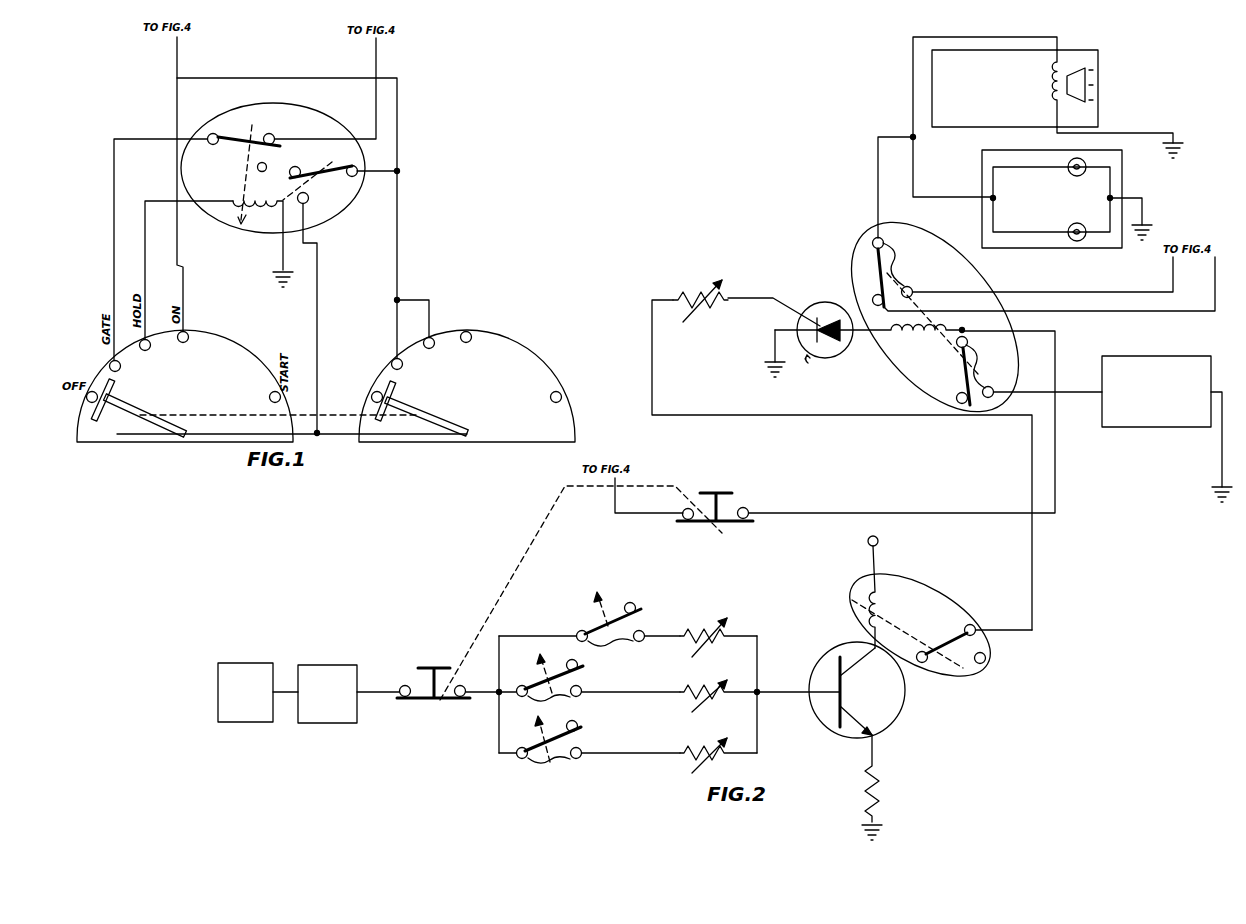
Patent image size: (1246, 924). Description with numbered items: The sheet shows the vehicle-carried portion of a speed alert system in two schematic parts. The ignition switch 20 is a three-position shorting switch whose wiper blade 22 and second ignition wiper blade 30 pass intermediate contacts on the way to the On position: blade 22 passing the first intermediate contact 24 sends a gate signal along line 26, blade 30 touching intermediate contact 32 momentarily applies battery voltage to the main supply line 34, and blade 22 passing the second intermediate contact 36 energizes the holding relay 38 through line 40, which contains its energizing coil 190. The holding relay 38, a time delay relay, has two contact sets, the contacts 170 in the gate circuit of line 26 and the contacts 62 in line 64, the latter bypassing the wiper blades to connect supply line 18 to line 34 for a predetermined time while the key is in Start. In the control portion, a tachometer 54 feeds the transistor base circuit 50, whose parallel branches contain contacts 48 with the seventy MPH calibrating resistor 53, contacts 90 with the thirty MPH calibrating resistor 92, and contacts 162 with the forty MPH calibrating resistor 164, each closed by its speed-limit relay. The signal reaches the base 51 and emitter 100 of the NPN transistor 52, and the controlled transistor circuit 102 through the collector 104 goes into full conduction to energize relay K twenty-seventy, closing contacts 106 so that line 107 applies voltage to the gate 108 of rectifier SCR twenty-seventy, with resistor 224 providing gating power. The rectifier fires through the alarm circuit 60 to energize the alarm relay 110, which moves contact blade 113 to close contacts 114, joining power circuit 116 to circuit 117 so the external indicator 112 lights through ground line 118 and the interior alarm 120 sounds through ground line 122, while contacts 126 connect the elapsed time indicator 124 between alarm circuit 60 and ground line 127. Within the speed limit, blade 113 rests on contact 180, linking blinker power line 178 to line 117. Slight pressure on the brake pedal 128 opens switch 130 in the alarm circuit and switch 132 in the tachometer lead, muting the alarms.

In FIG. 1, the supply line 18 is at (145, 435).
In FIG. 1, the ignition switch 20 is at (218, 399).
In FIG. 1, the wiper blade 22 is at (124, 412).
In FIG. 1, the first intermediate contact 24 is at (109, 364).
In FIG. 1, the line 26 is at (377, 40).
In FIG. 1, the ignition wiper blade 30 is at (405, 410).
In FIG. 1, the intermediate contact 32 is at (403, 364).
In FIG. 1, the main supply line 34 is at (178, 39).
In FIG. 1, the second intermediate contact 36 is at (150, 350).
In FIG. 1, the holding relay 38 is at (211, 180).
In FIG. 1, the line 40 is at (146, 278).
In FIG. 1, the contacts 62 is at (314, 189).
In FIG. 1, the line 64 is at (318, 298).
In FIG. 1, the contacts 170 is at (250, 138).
In FIG. 1, the energizing coil 190 is at (233, 201).
In FIG. 2, the contacts 48 is at (589, 619).
In FIG. 2, the transistor base circuit 50 is at (768, 689).
In FIG. 2, the base 51 is at (836, 695).
In FIG. 2, the NPN transistor 52 is at (831, 735).
In FIG. 2, the seventy MPH calibrating resistor 53 is at (731, 637).
In FIG. 2, the tachometer 54 is at (250, 707).
In FIG. 2, the alarm circuit 60 is at (1027, 337).
In FIG. 2, the contacts 90 is at (589, 681).
In FIG. 2, the thirty MPH calibrating resistor 92 is at (699, 682).
In FIG. 2, the emitter 100 is at (868, 711).
In FIG. 2, the transistor circuit 102 is at (876, 567).
In FIG. 2, the collector 104 is at (868, 677).
In FIG. 2, the contacts 106 is at (964, 631).
In FIG. 2, the line 107 is at (703, 415).
In FIG. 2, the gate 108 is at (804, 323).
In FIG. 2, the alarm relay 110 is at (933, 393).
In FIG. 2, the external indicator 112 is at (1058, 222).
In FIG. 2, the contact blade 113 is at (870, 266).
In FIG. 2, the contacts 114 is at (913, 264).
In FIG. 2, the power circuit 116 is at (939, 292).
In FIG. 2, the circuit 117 is at (878, 181).
In FIG. 2, the ground line 118 is at (1143, 208).
In FIG. 2, the interior alarm 120 is at (1036, 115).
In FIG. 2, the ground line 122 is at (1129, 133).
In FIG. 2, the elapsed time indicator 124 is at (1202, 417).
In FIG. 2, the contacts 126 is at (989, 366).
In FIG. 2, the ground line 127 is at (1222, 461).
In FIG. 2, the brake pedal 128 is at (712, 494).
In FIG. 2, the switch 130 is at (734, 530).
In FIG. 2, the switch 132 is at (415, 708).
In FIG. 2, the contacts 162 is at (589, 749).
In FIG. 2, the forty MPH calibrating resistor 164 is at (707, 745).
In FIG. 2, the power line 178 is at (939, 311).
In FIG. 2, the contact 180 is at (873, 298).
In FIG. 2, the resistor 224 is at (726, 298).